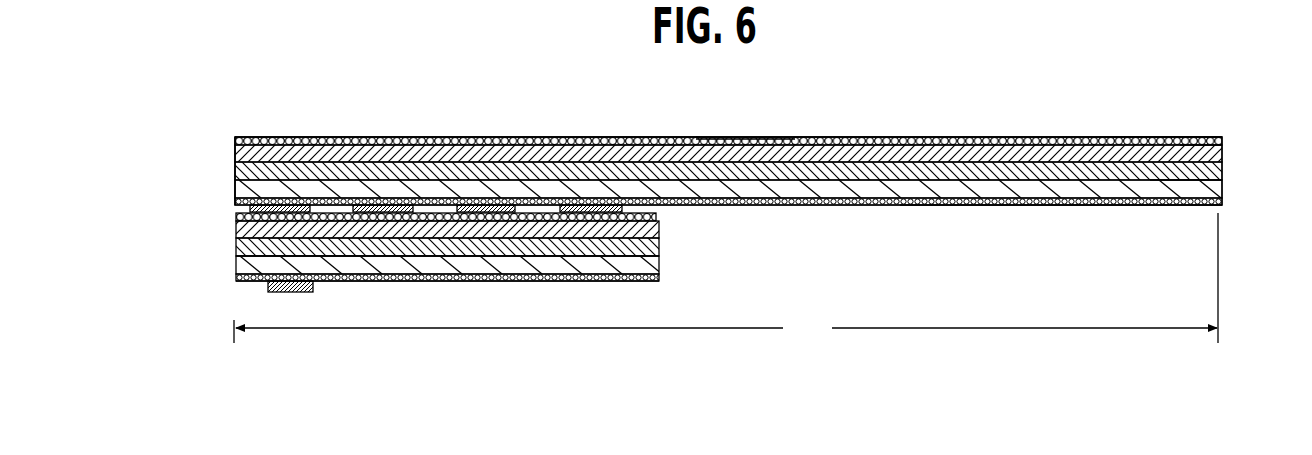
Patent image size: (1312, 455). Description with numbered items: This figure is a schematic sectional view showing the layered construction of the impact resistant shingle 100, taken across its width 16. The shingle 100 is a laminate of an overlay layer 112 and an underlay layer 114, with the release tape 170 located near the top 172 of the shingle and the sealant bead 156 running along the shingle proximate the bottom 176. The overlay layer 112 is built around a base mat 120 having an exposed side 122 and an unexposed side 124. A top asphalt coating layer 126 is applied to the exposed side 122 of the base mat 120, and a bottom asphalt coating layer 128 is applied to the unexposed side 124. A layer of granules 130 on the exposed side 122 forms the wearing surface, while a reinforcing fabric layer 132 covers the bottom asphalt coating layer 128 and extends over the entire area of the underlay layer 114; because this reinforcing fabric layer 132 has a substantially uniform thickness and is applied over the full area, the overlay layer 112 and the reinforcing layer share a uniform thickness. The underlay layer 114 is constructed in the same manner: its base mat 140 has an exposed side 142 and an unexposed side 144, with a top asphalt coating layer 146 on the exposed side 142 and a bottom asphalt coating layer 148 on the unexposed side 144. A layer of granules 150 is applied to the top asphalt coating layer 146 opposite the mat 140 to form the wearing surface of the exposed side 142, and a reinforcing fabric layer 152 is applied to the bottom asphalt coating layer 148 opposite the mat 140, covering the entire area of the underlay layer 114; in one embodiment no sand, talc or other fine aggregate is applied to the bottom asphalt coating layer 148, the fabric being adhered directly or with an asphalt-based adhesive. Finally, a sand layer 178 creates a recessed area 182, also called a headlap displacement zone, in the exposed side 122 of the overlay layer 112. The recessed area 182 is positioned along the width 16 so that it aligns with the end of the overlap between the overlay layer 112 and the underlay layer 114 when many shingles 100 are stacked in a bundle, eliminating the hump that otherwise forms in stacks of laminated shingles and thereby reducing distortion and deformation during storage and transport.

The shingle 100 is at (218, 98).
The overlay layer 112 is at (1195, 140).
The underlay layer 114 is at (356, 263).
The base mat 120 is at (1220, 172).
The exposed side 122 is at (440, 118).
The unexposed side 124 is at (1117, 205).
The top asphalt coating layer 126 is at (1222, 142).
The bottom asphalt coating layer 128 is at (1203, 188).
The layer of granules 130 is at (1034, 137).
The reinforcing fabric layer 132 is at (1023, 205).
The base mat 140 is at (660, 244).
The exposed side 142 is at (237, 213).
The unexposed side 144 is at (583, 281).
The top asphalt coating layer 146 is at (660, 225).
The bottom asphalt coating layer 148 is at (650, 264).
The layer of granules 150 is at (533, 207).
The reinforcing fabric layer 152 is at (457, 281).
The sealant bead 156 is at (268, 288).
The release tape 170 is at (1155, 137).
The top 172 is at (1222, 156).
The bottom 176 is at (235, 151).
The sand layer 178 is at (775, 130).
The recessed area 182 is at (696, 139).
The width 16 is at (726, 278).